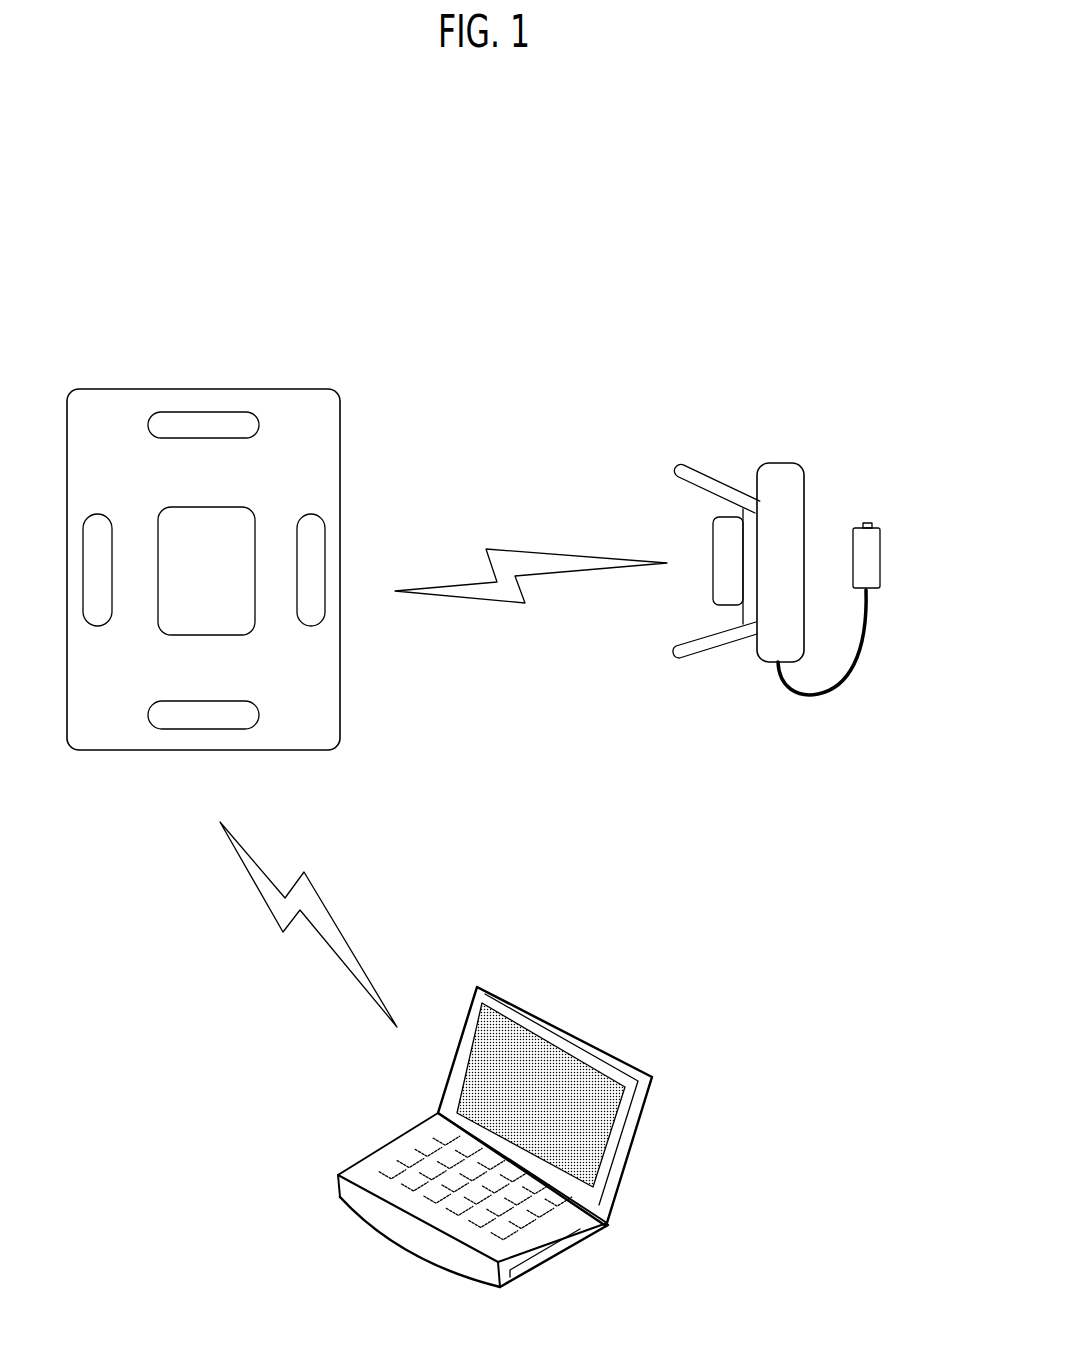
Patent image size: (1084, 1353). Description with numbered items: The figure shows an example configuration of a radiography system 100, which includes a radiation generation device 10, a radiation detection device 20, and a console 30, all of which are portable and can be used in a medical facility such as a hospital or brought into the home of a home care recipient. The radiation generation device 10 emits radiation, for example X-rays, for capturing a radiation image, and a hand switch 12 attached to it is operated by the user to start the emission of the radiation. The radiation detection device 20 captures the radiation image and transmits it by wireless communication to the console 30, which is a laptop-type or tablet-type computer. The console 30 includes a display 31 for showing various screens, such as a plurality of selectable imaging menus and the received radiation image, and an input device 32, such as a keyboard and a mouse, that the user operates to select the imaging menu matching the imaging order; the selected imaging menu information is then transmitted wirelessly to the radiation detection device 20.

The radiography system 100 is at (675, 281).
The radiation generation device 10 is at (781, 462).
The hand switch 12 is at (881, 553).
The radiation detection device 20 is at (204, 393).
The console 30 is at (571, 1028).
The display 31 is at (588, 1120).
The input device 32 is at (565, 1205).